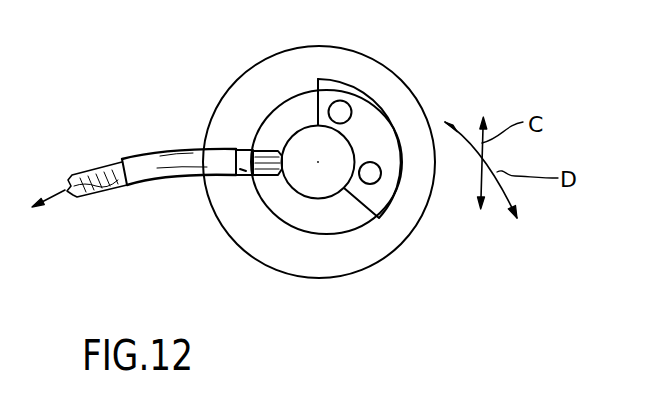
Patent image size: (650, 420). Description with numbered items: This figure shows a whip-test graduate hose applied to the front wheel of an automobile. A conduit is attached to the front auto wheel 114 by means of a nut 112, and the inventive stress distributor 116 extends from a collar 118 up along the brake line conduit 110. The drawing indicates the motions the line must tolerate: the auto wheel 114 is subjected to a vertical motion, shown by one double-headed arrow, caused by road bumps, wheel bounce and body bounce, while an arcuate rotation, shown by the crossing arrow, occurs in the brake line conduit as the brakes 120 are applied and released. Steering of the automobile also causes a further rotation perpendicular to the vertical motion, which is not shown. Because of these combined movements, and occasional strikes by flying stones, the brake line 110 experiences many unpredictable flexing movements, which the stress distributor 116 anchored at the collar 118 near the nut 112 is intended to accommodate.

The brake line conduit 110 is at (92, 192).
The nut 112 is at (270, 177).
The front auto wheel 114 is at (421, 109).
The stress distributor 116 is at (160, 172).
The collar 118 is at (250, 177).
The brakes 120 is at (363, 91).